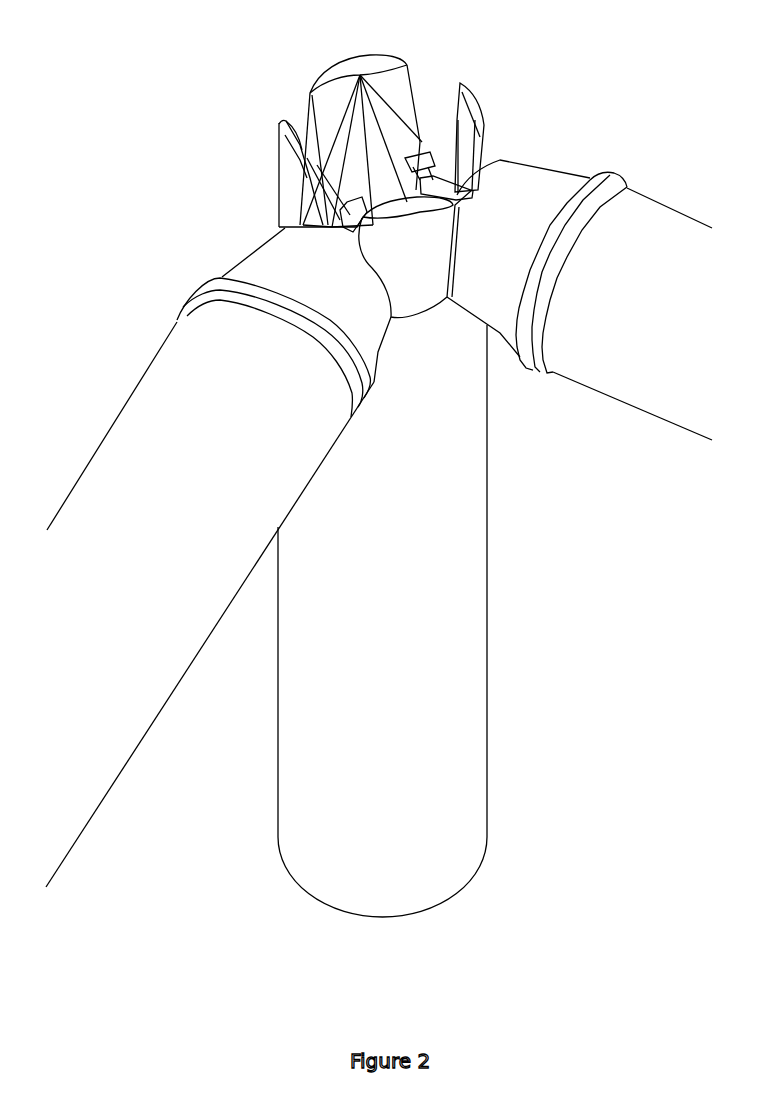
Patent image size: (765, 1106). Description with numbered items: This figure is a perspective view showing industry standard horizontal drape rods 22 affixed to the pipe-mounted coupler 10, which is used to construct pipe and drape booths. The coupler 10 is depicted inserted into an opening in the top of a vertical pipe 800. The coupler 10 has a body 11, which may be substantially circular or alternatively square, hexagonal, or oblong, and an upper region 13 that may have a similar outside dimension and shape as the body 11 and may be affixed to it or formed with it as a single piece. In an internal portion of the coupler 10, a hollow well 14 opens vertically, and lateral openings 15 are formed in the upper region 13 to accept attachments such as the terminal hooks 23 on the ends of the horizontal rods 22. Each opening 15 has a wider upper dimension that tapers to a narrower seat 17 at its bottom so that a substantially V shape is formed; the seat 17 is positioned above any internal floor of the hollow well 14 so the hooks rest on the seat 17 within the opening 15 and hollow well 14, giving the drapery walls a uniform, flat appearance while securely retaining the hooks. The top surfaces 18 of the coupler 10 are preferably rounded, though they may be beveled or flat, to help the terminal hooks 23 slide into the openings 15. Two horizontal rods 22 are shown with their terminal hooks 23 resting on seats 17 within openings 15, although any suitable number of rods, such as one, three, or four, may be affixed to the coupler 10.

The pipe-mounted coupler 10 is at (280, 165).
The body 11 is at (415, 254).
The upper region 13 is at (293, 200).
The hollow well 14 is at (367, 133).
The opening 15 is at (297, 128).
The seat 17 is at (421, 150).
The top surfaces 18 is at (365, 61).
The horizontal drape rod 22 is at (155, 405).
The terminal hook 23 is at (343, 225).
The vertical pipe 800 is at (340, 807).